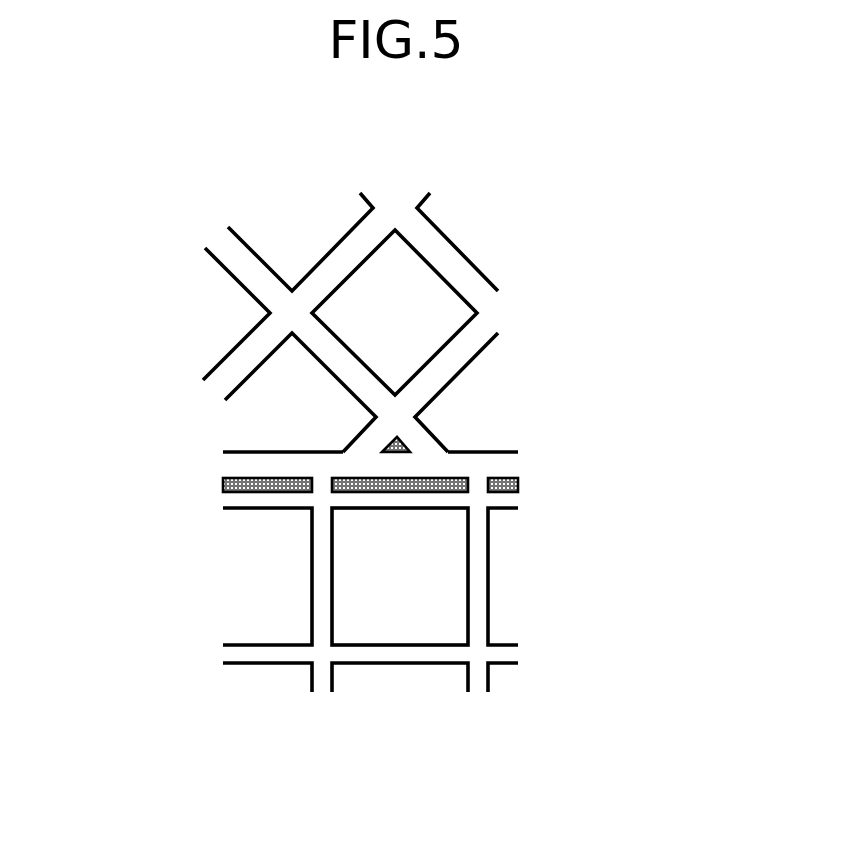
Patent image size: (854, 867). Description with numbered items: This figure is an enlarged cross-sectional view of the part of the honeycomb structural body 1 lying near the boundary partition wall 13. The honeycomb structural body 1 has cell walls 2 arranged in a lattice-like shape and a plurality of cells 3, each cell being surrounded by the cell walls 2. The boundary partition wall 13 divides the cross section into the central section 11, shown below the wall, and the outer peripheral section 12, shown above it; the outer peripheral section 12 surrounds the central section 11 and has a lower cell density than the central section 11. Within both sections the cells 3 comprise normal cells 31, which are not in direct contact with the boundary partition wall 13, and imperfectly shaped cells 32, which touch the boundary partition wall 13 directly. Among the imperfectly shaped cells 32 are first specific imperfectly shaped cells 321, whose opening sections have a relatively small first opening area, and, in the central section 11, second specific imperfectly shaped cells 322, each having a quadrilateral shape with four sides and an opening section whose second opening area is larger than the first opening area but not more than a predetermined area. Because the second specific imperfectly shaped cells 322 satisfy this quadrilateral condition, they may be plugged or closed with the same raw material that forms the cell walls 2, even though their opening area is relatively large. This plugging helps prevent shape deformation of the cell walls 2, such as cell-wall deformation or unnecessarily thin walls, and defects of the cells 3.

The honeycomb structural body 1 is at (588, 243).
The central section 11 is at (710, 495).
The outer peripheral section 12 is at (710, 200).
The boundary partition wall 13 is at (277, 463).
The cell wall 2 is at (457, 358).
The cell 3 is at (295, 227).
The normal cell 31 is at (405, 295).
The imperfectly shaped cell 32 is at (273, 393).
The first specific imperfectly shaped cell 321 is at (400, 441).
The second specific imperfectly shaped cell 322 is at (395, 489).